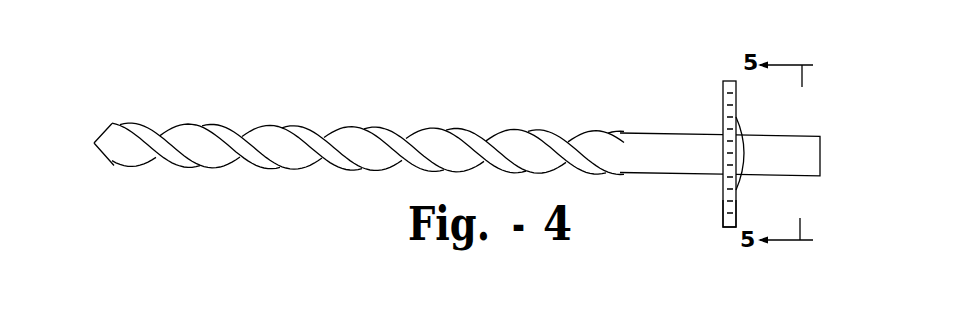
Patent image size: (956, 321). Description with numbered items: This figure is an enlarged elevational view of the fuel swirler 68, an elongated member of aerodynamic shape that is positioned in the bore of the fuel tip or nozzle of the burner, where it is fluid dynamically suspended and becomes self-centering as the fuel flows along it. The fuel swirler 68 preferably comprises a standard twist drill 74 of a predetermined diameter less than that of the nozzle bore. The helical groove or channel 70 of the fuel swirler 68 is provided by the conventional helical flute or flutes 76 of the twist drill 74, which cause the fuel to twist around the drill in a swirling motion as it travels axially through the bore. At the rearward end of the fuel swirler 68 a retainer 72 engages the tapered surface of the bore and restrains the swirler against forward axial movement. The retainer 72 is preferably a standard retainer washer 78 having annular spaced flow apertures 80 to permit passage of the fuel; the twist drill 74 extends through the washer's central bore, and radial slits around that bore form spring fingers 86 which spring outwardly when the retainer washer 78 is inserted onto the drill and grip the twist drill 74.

The fuel swirler 68 is at (621, 131).
The helical groove or channel 70 is at (425, 141).
The retainer 72 is at (720, 101).
The twist drill 74 is at (268, 166).
The helical flute 76 is at (363, 150).
The retainer washer 78 is at (722, 201).
The flow apertures 80 is at (737, 100).
The spring fingers 86 is at (746, 139).